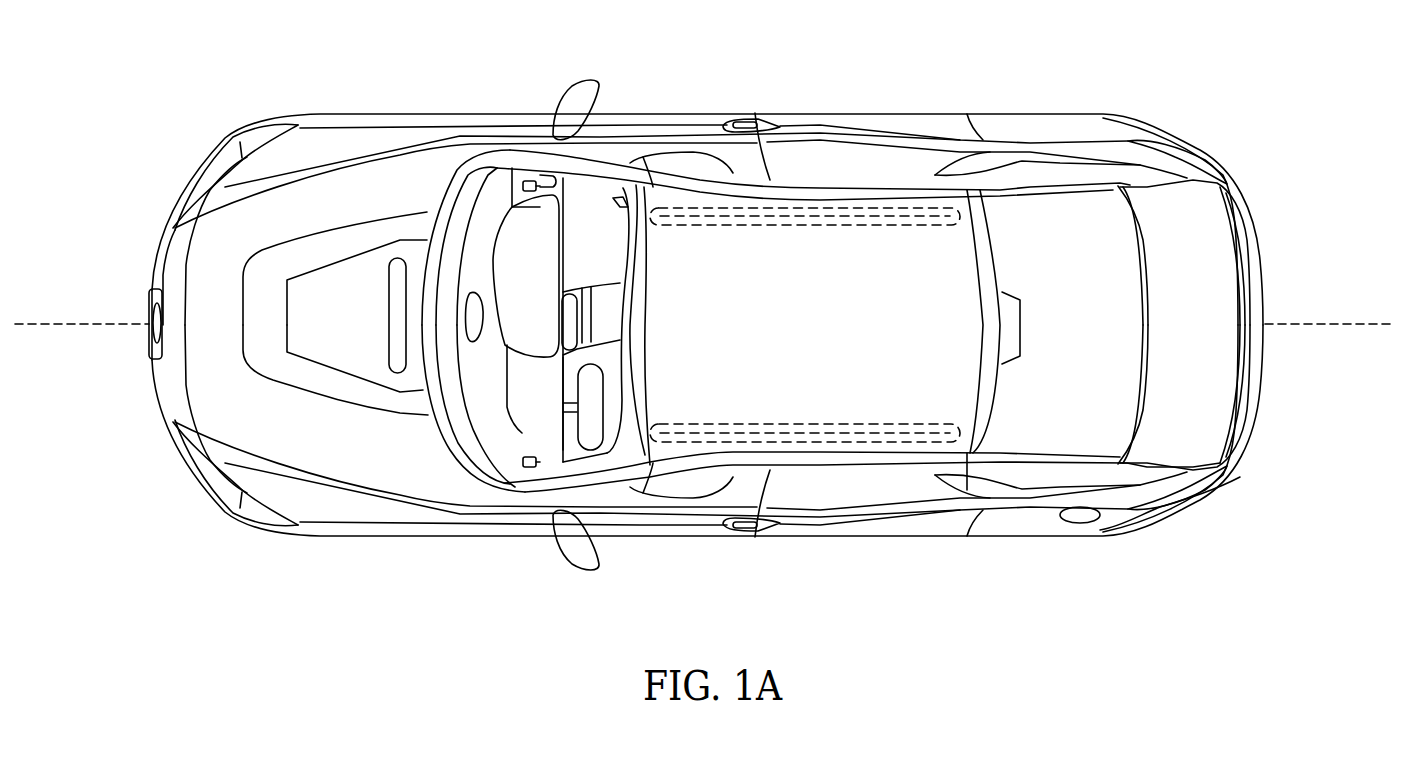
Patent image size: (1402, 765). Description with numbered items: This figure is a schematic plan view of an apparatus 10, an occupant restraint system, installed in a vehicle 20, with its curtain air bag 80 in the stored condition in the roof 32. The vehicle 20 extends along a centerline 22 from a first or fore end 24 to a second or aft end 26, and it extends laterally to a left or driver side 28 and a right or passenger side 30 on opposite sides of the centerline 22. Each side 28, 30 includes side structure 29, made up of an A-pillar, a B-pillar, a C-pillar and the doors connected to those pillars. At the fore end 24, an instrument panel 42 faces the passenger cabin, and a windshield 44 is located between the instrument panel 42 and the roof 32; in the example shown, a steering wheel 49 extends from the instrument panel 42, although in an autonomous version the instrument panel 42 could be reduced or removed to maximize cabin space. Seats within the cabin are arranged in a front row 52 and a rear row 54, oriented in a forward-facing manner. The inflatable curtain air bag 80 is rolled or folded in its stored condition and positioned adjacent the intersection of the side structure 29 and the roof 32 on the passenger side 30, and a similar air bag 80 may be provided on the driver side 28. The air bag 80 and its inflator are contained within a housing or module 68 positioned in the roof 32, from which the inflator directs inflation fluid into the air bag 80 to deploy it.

The apparatus 10 is at (812, 403).
The vehicle 20 is at (1005, 92).
The centerline 22 is at (60, 326).
The first or fore end 24 is at (181, 124).
The second or aft end 26 is at (1238, 138).
The left/driver side 28 is at (785, 545).
The side structure 29 is at (820, 130).
The right/passenger side 30 is at (753, 111).
The roof 32 is at (838, 336).
The instrument panel 42 is at (498, 197).
The windshield 44 is at (522, 433).
The steering wheel 49 is at (593, 432).
The front row 52 is at (678, 498).
The rear row 54 is at (967, 486).
The housing/module 68 is at (698, 208).
The inflatable curtain airbag 80 is at (890, 208).